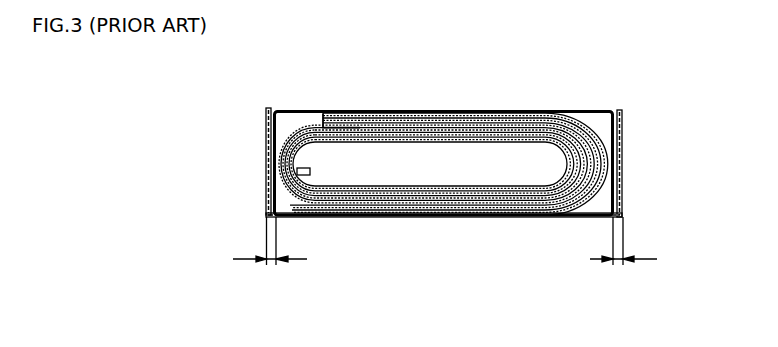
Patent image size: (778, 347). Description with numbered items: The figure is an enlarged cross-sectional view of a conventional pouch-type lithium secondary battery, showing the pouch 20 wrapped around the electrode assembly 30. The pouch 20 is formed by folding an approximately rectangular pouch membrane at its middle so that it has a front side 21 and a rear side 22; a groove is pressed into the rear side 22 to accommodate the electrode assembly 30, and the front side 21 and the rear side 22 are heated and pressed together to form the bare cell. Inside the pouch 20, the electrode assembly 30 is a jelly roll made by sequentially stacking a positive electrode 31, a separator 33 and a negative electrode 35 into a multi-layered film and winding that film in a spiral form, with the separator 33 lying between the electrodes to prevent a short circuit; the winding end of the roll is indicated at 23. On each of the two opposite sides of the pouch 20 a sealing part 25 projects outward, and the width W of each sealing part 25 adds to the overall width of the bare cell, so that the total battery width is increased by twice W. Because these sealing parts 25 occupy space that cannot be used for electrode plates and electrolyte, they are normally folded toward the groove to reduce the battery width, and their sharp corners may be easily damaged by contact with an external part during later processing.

The pouch 20 is at (494, 148).
The front side 21 is at (623, 133).
The rear side 22 is at (621, 109).
The electrode tab / winding end 23 is at (297, 125).
The sealing parts 25 is at (264, 158).
The electrode assembly 30 is at (413, 197).
The positive electrode 31 is at (462, 205).
The separator 33 is at (497, 205).
The negative electrode 35 is at (530, 205).
The width of the sealing part W is at (445, 241).